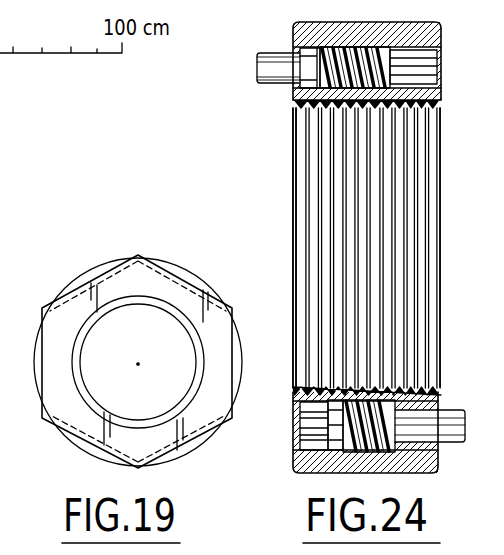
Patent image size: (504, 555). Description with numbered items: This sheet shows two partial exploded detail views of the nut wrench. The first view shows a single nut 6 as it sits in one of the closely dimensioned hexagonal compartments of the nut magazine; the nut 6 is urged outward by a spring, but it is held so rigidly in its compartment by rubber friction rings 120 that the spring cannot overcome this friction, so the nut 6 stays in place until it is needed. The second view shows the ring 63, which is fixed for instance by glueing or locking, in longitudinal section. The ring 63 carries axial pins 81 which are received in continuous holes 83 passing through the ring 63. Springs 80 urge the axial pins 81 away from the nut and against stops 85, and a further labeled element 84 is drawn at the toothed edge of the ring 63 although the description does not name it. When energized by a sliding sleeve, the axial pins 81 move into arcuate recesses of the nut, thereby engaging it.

In FIG. 19, the nut 6 is at (93, 461).
In FIG. 19, the rubber friction rings 120 is at (80, 290).
In FIG. 24, the ring 63 is at (286, 242).
In FIG. 24, the springs 80 is at (348, 82).
In FIG. 24, the axial pins 81 is at (263, 53).
In FIG. 24, the continuous holes 83 is at (410, 104).
In FIG. 24, the toothed edge 84 is at (298, 102).
In FIG. 24, the stops 85 is at (293, 91).